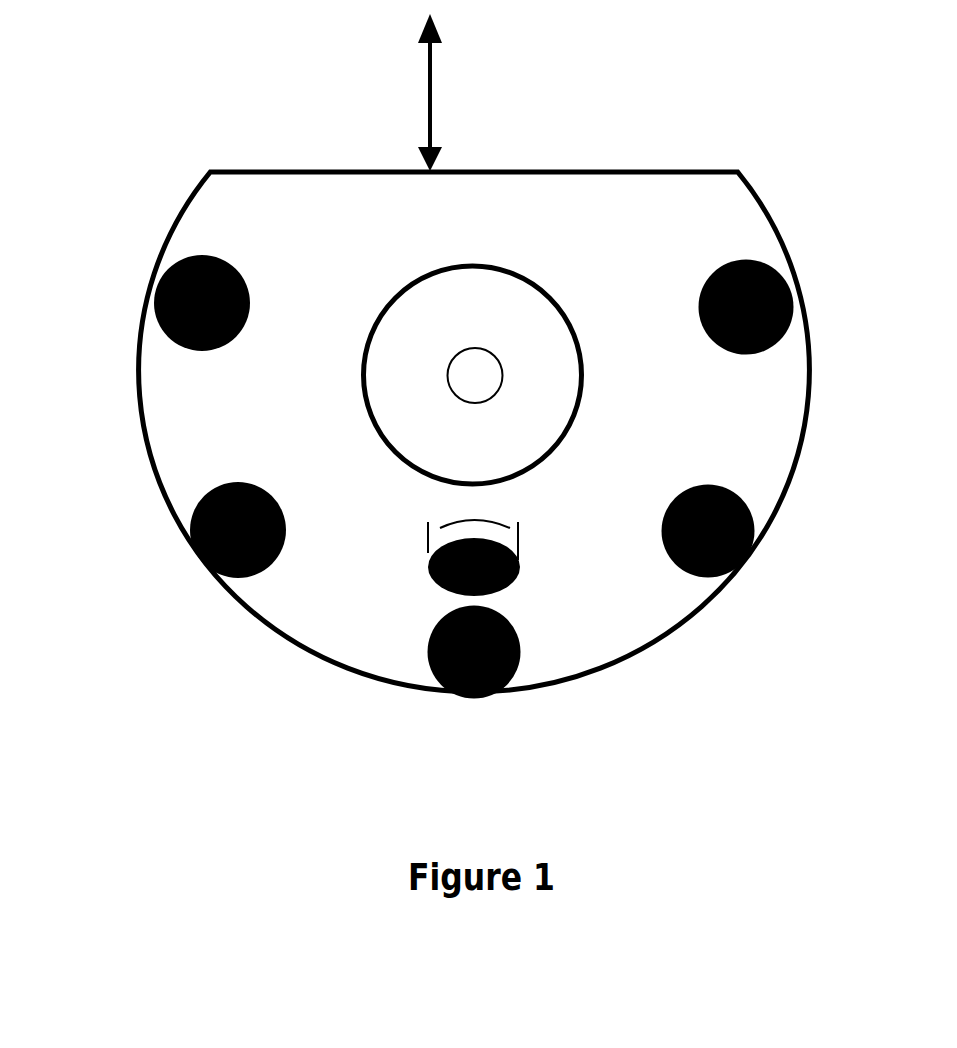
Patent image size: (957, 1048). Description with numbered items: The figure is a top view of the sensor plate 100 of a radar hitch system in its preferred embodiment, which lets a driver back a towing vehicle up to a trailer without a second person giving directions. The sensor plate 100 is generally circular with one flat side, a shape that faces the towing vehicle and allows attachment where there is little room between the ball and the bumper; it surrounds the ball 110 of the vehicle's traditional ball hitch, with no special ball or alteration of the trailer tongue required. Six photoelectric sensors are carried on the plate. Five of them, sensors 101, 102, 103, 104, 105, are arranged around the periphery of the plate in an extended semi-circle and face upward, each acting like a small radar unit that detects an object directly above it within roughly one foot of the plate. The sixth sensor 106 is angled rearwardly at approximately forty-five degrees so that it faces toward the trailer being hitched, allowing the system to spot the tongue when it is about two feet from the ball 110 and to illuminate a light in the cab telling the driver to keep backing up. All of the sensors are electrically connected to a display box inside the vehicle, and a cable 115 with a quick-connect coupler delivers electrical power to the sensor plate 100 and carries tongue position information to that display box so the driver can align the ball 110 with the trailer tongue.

The sensor plate 100 is at (367, 240).
The sensor 101 is at (158, 316).
The sensor 102 is at (192, 555).
The sensor 103 is at (462, 700).
The sensor 104 is at (754, 557).
The sensor 105 is at (793, 278).
The sixth sensor 106 is at (520, 570).
The ball 110 is at (493, 450).
The cable 115 is at (432, 87).